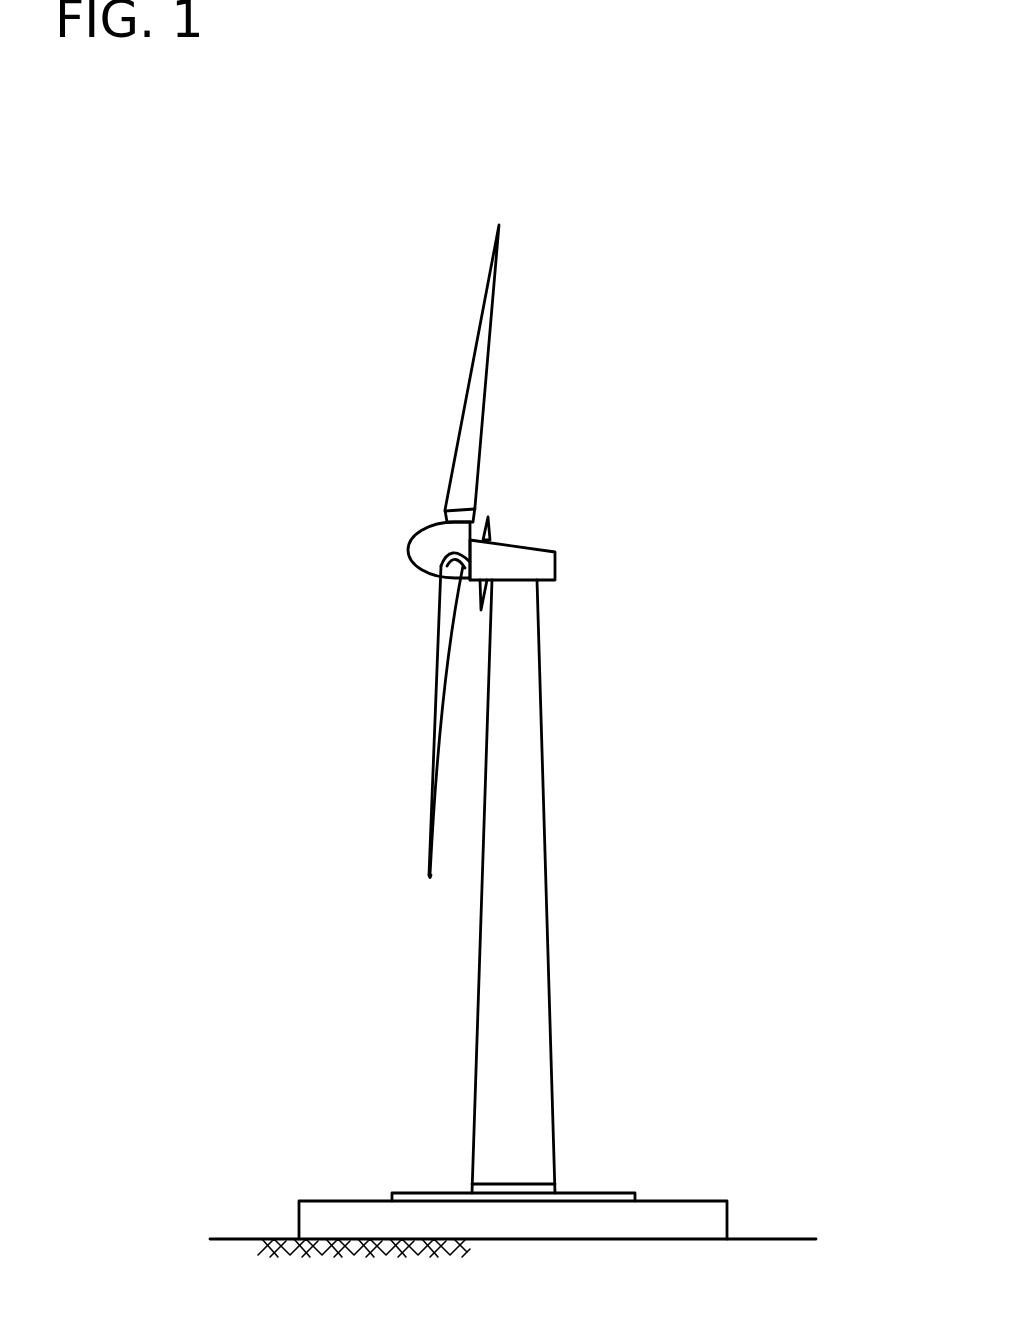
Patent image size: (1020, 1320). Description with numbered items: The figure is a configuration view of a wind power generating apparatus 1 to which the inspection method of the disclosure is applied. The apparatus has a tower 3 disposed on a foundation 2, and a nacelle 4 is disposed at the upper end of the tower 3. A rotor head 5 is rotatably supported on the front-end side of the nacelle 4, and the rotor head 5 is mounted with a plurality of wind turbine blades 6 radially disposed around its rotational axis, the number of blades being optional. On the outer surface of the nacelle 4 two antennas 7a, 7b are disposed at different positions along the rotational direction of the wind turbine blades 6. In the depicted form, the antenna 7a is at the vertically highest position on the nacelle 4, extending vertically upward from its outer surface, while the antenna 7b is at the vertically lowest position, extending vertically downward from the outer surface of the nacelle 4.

The wind power generating apparatus 1 is at (650, 468).
The foundation 2 is at (682, 1200).
The tower 3 is at (540, 762).
The nacelle 4 is at (527, 547).
The rotor head 5 is at (408, 542).
The wind turbine blade 6 is at (492, 328).
The antenna 7a is at (489, 514).
The antenna 7b is at (478, 608).